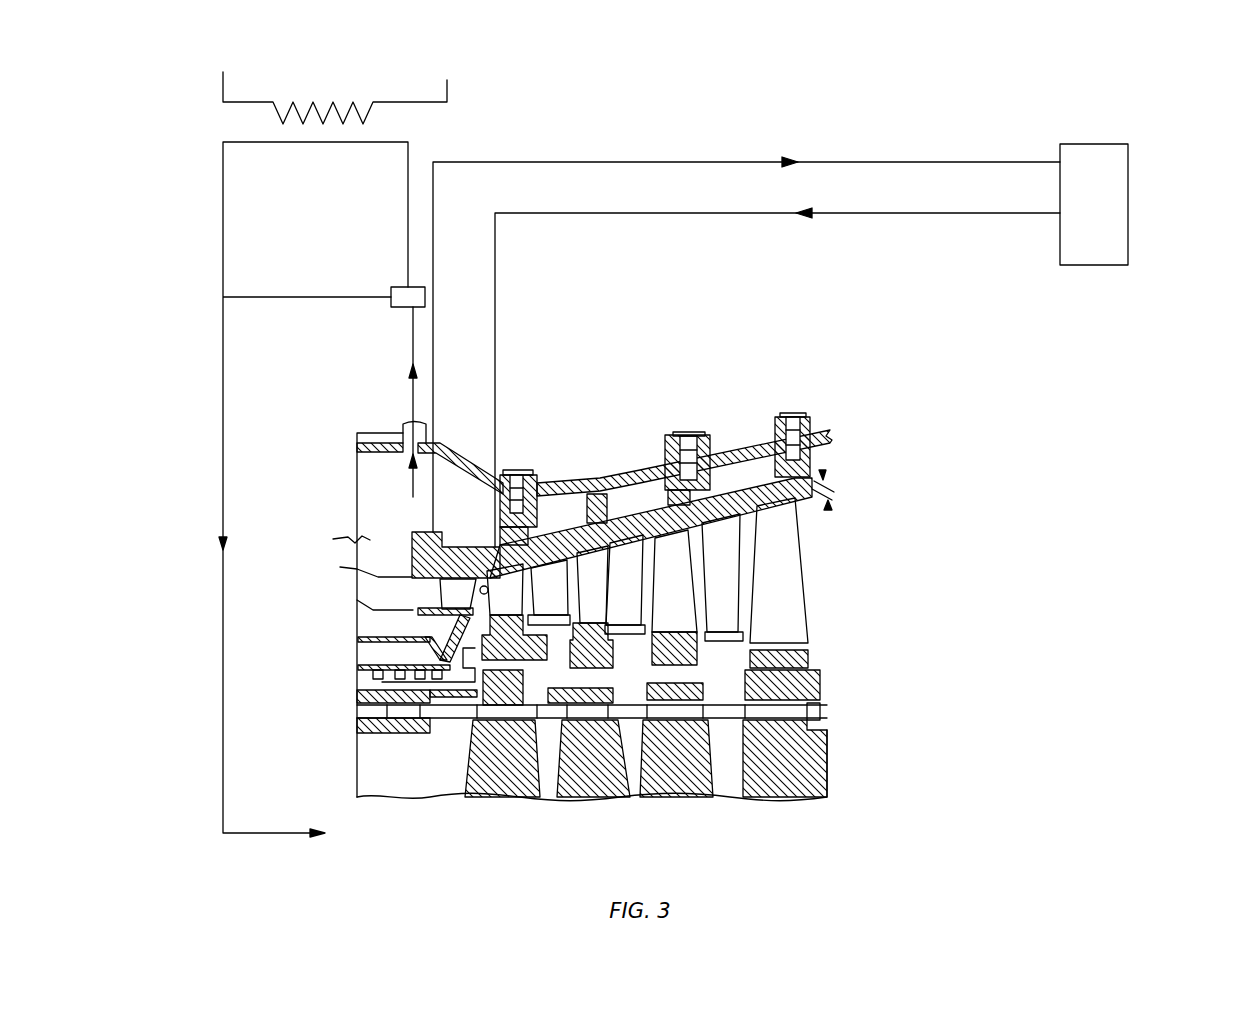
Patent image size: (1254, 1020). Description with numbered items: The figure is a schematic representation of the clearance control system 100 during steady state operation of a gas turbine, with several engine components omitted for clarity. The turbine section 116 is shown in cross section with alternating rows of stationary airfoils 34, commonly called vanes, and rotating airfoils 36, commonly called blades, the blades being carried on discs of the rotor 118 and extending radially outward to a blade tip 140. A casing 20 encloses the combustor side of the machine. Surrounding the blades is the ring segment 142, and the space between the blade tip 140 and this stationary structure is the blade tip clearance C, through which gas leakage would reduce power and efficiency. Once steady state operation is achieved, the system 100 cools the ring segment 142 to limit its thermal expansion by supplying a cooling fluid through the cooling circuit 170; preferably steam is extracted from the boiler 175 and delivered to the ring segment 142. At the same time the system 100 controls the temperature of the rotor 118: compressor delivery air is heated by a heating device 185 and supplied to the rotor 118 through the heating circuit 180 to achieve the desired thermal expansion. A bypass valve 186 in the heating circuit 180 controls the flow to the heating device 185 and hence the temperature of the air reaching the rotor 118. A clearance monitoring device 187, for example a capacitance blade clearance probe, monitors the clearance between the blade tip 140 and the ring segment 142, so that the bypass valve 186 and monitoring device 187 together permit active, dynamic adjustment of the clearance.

The clearance control system 100 is at (925, 112).
The turbine section 116 is at (812, 355).
The rotor 118 is at (470, 776).
The casing 20 is at (470, 455).
The stationary airfoils 34 is at (446, 602).
The rotating airfoils 36 is at (495, 604).
The blade tip 140 is at (585, 563).
The ring segment 142 is at (470, 543).
The cooling circuit 170 is at (924, 215).
The boiler 175 is at (1130, 196).
The heating circuit 180 is at (414, 327).
The heating device 185 is at (410, 73).
The bypass valve 186 is at (391, 296).
The clearance monitoring device 187 is at (340, 567).
The blade tip clearance C is at (833, 490).